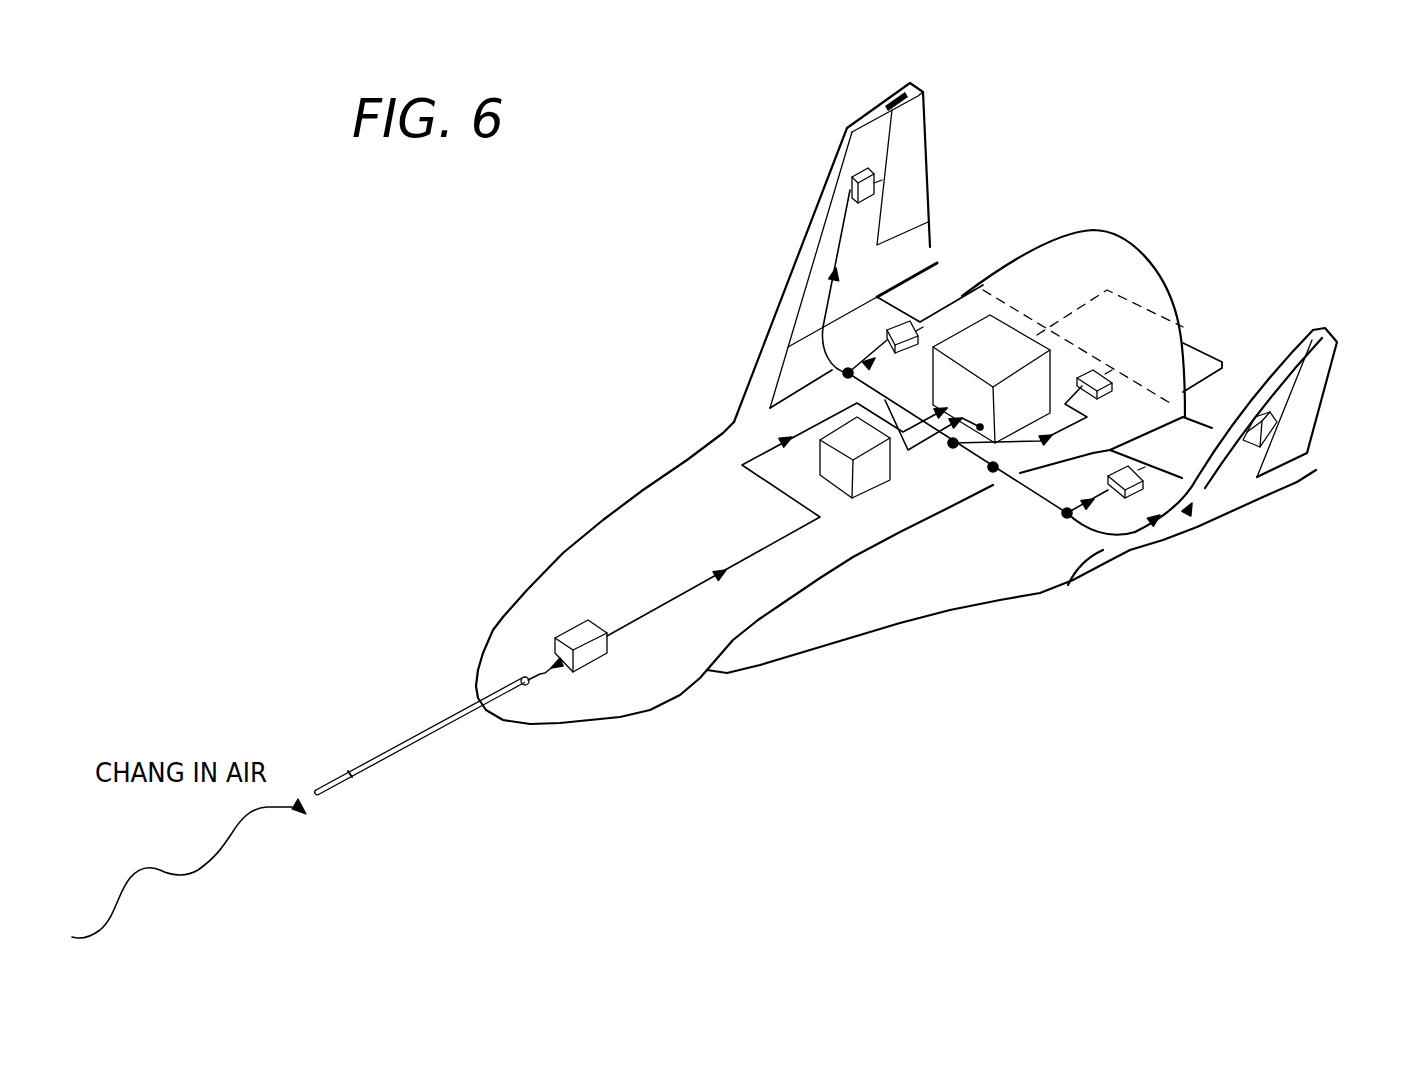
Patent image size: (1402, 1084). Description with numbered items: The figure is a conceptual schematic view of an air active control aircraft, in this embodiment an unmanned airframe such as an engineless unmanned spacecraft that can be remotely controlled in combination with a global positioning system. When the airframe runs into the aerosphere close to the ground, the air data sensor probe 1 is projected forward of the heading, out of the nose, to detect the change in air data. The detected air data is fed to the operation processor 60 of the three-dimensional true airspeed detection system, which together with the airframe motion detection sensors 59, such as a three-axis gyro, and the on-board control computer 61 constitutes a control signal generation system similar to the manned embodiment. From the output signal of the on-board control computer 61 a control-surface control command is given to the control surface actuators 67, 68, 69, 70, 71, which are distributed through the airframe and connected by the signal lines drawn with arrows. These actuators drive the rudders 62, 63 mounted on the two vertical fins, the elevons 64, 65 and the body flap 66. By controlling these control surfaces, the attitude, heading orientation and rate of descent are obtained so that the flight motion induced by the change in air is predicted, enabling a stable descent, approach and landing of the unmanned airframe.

The air data sensor probe 1 is at (422, 770).
The airframe motion detection sensors 59 is at (855, 592).
The operation processor of the three-dimensional true airspeed detection system 60 is at (608, 708).
The on-board control computer 61 is at (1060, 294).
The rudder 62 is at (1261, 430).
The rudder 63 is at (871, 252).
The elevon 64 is at (1246, 362).
The elevon 65 is at (950, 266).
The body flap 66 is at (1228, 338).
The control surface actuator 67 is at (1246, 515).
The control surface actuator 68 is at (806, 168).
The control surface actuator 69 is at (1120, 577).
The control surface actuator 70 is at (801, 294).
The control surface actuator 71 is at (1170, 312).